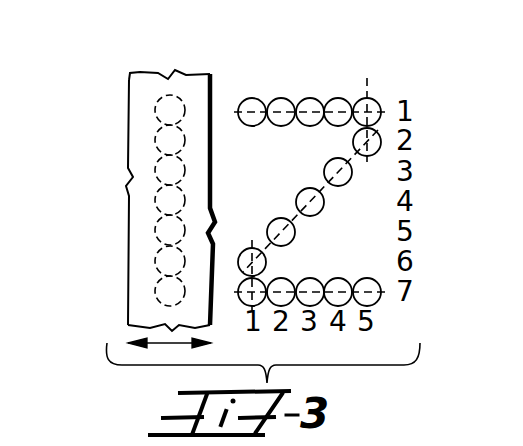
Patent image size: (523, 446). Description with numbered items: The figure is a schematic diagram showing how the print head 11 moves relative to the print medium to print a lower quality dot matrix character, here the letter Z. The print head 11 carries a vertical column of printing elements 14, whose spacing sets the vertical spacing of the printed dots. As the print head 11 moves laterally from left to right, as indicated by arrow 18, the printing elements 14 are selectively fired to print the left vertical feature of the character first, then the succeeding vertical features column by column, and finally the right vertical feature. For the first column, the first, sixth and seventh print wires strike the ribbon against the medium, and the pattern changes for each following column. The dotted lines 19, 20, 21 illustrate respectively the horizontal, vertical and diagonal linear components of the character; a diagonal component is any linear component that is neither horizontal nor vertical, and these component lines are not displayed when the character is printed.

The print head 11 is at (128, 223).
The printing elements 14 is at (156, 236).
The arrow 18 is at (179, 344).
The dotted line 19 is at (338, 101).
The dotted line 20 is at (370, 84).
The dotted line 21 is at (329, 182).